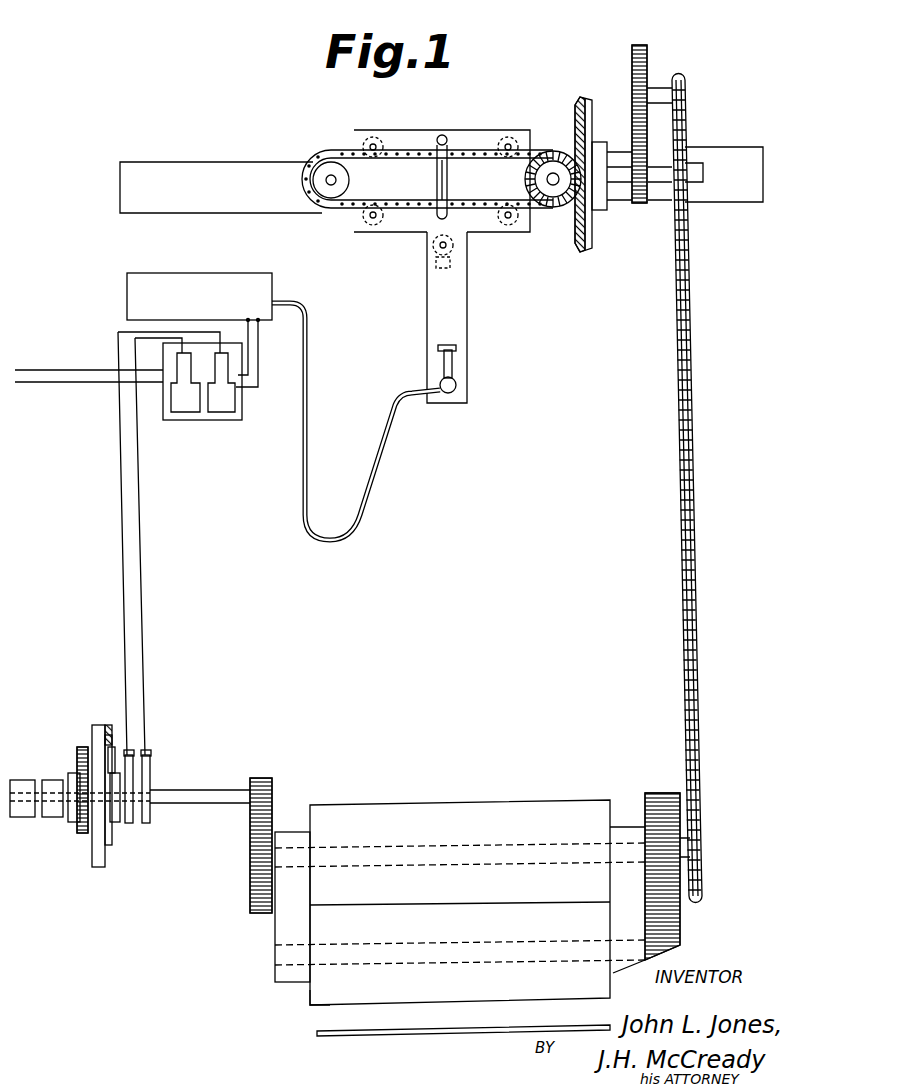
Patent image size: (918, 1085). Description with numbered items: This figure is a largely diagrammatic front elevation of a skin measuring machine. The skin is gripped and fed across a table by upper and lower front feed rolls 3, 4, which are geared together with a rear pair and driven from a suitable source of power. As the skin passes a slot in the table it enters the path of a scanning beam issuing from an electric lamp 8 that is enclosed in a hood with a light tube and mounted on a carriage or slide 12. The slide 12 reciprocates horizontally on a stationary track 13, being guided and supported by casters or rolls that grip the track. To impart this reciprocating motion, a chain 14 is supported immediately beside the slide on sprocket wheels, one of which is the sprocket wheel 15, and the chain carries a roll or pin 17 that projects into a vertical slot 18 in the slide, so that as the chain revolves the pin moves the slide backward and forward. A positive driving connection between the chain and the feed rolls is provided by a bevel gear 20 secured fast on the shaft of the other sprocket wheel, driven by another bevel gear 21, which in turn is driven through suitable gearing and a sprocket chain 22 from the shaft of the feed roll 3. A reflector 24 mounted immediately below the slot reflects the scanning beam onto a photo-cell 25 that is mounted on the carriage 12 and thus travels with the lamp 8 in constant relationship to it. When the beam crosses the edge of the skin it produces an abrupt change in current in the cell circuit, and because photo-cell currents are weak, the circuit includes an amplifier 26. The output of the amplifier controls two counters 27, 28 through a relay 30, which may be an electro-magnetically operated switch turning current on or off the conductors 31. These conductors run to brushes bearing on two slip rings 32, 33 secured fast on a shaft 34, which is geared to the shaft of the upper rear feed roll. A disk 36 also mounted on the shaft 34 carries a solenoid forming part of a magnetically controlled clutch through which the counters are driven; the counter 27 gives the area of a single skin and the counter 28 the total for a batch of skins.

The upper front feed roll 3 is at (365, 810).
The lower front feed roll 4 is at (328, 986).
The electric lamp 8 is at (434, 252).
The carriage or slide 12 is at (462, 290).
The stationary track 13 is at (163, 173).
The chain 14 is at (338, 150).
The sprocket wheel 15 is at (322, 178).
The roll or pin 17 is at (444, 135).
The vertical slot 18 is at (437, 180).
The bevel gear 20 is at (555, 200).
The bevel gear 21 is at (578, 108).
The sprocket chain 22 is at (690, 410).
The reflector 24 is at (357, 1037).
The photo-cell 25 is at (462, 387).
The amplifier 26 is at (127, 285).
The counter 27 is at (50, 785).
The counter 28 is at (18, 785).
The relay 30 is at (206, 421).
The conductors 31 is at (146, 682).
The slip ring 32 is at (131, 824).
The slip ring 33 is at (152, 818).
The shaft 34 is at (195, 792).
The disk 36 is at (98, 858).